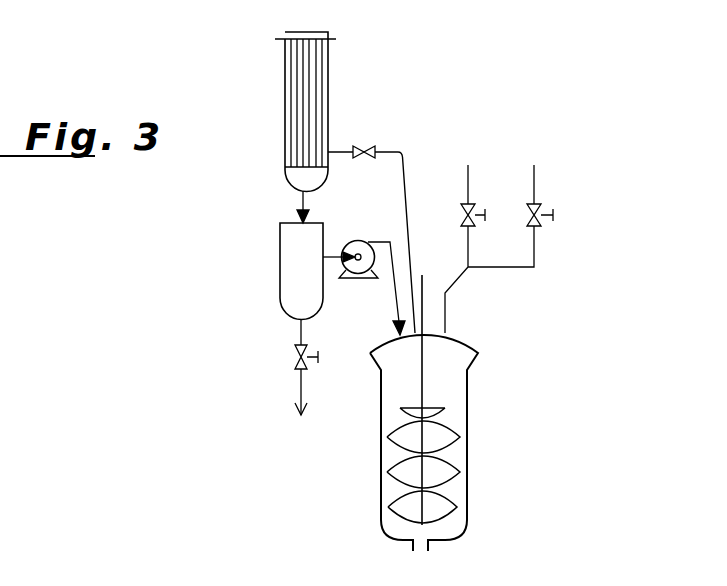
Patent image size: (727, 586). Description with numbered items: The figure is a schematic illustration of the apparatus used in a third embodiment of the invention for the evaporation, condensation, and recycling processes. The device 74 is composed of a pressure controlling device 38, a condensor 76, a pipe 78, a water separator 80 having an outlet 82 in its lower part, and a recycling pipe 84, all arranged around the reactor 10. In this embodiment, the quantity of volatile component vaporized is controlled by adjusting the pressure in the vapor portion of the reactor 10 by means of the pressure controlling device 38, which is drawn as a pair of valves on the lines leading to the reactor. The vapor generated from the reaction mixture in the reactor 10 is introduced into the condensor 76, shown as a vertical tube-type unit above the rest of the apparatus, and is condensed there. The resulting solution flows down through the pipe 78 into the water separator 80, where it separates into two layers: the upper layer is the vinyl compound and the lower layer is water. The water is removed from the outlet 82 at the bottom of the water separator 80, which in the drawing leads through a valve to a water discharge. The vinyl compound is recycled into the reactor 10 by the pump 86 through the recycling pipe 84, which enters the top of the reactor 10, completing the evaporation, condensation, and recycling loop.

The device 74 is at (354, 112).
The condensor 76 is at (328, 111).
The pipe 78 is at (301, 196).
The water separator 80 is at (290, 282).
The outlet 82 is at (293, 330).
The recycling pipe 84 is at (397, 308).
The pump 86 is at (362, 240).
The pressure controlling device 38 is at (530, 208).
The reactor 10 is at (457, 396).